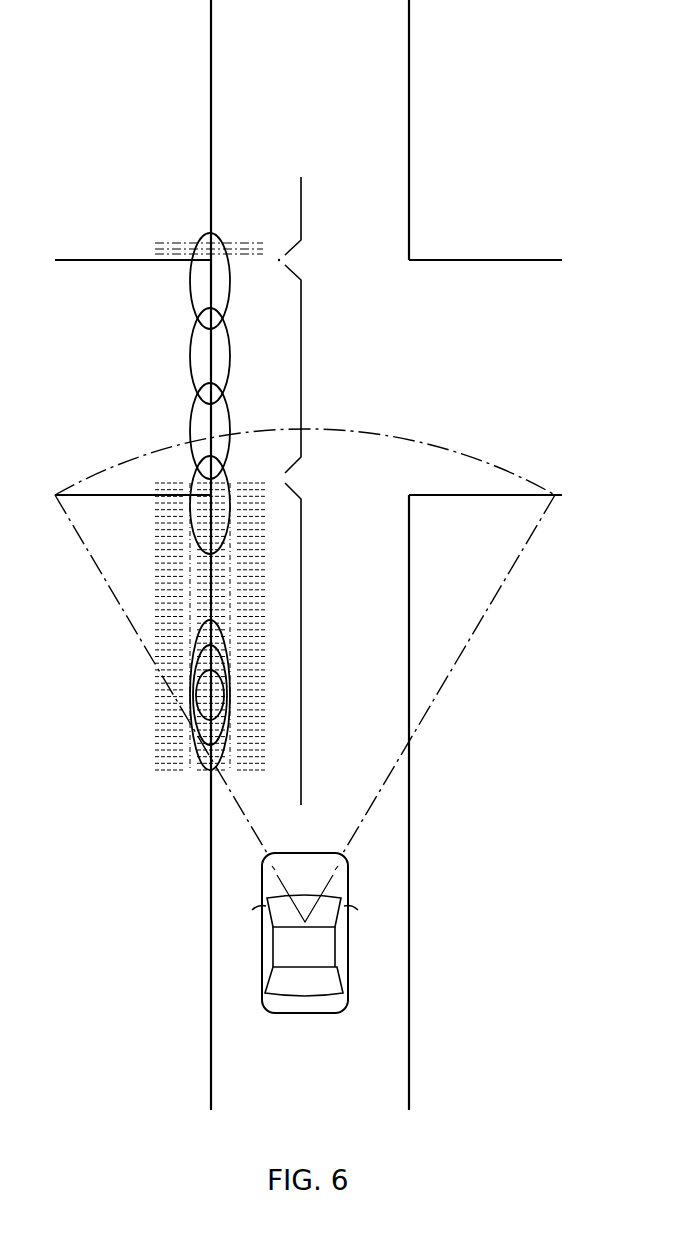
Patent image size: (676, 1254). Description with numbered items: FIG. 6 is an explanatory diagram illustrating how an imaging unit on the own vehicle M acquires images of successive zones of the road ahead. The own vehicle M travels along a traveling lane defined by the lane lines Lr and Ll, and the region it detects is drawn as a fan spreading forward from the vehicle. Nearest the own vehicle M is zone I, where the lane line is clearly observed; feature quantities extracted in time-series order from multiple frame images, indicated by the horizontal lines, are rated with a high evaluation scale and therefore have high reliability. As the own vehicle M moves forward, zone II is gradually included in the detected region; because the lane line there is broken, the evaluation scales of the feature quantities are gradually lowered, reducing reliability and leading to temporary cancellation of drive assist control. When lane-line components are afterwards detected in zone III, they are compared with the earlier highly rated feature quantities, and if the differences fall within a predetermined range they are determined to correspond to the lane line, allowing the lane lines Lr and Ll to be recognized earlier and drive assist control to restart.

The left lane line Ll is at (211, 851).
The right lane line Lr is at (410, 876).
The own vehicle M is at (262, 960).
The zone I is at (311, 644).
The zone II is at (314, 369).
The zone III is at (314, 219).